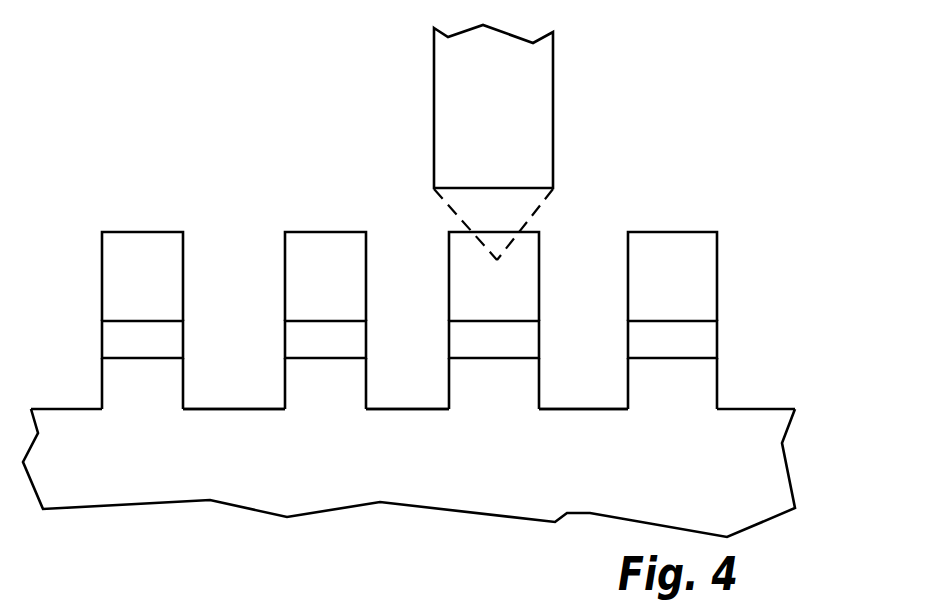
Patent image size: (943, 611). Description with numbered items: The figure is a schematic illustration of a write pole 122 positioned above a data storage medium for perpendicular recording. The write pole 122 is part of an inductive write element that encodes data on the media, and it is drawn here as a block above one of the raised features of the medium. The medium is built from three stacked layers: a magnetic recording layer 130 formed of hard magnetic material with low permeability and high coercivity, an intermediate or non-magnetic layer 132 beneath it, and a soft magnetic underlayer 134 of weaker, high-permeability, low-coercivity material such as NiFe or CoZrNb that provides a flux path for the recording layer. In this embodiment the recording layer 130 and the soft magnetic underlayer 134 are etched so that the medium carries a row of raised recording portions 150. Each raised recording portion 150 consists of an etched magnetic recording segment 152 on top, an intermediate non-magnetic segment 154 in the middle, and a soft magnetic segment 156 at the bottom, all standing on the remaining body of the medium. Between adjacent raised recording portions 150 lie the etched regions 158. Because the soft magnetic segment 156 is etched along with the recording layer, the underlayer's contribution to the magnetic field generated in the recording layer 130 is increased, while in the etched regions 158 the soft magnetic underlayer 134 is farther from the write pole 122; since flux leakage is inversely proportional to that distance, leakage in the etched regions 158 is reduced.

The write pole 122 is at (553, 122).
The magnetic recording layer 130 is at (722, 277).
The intermediate or non-magnetic layer 132 is at (722, 335).
The soft magnetic underlayer 134 is at (722, 395).
The raised recording portions 150 is at (455, 285).
The etched magnetic recording segment 152 is at (455, 276).
The intermediate non-magnetic segment 154 is at (455, 335).
The soft magnetic segment 156 is at (455, 383).
The etched regions 158 is at (209, 349).